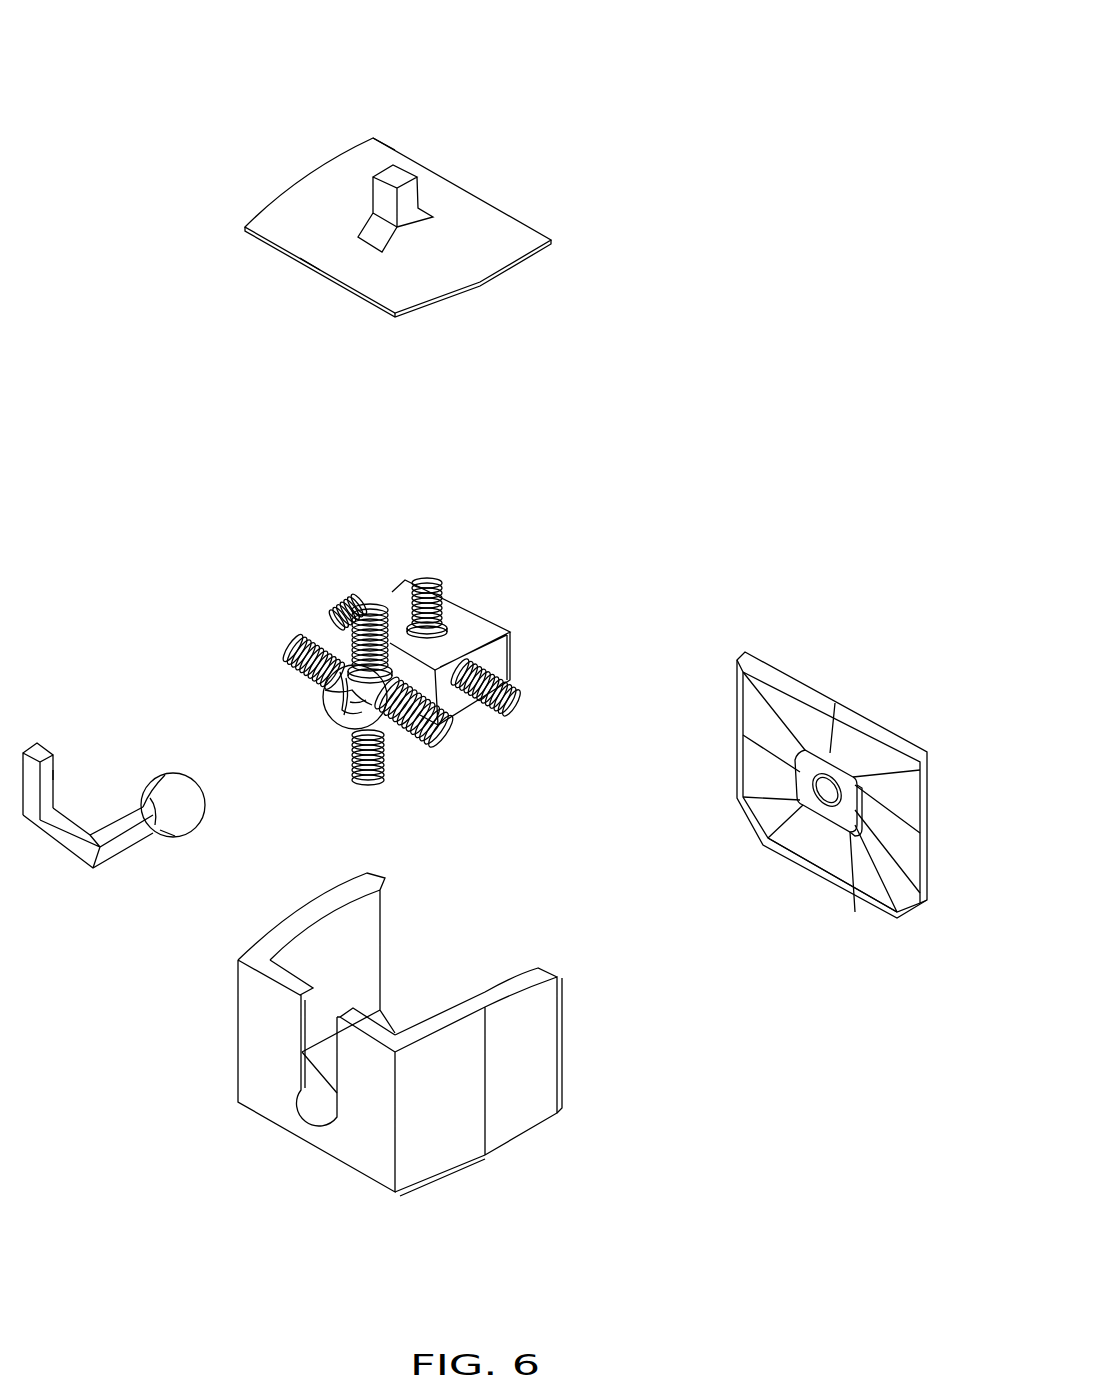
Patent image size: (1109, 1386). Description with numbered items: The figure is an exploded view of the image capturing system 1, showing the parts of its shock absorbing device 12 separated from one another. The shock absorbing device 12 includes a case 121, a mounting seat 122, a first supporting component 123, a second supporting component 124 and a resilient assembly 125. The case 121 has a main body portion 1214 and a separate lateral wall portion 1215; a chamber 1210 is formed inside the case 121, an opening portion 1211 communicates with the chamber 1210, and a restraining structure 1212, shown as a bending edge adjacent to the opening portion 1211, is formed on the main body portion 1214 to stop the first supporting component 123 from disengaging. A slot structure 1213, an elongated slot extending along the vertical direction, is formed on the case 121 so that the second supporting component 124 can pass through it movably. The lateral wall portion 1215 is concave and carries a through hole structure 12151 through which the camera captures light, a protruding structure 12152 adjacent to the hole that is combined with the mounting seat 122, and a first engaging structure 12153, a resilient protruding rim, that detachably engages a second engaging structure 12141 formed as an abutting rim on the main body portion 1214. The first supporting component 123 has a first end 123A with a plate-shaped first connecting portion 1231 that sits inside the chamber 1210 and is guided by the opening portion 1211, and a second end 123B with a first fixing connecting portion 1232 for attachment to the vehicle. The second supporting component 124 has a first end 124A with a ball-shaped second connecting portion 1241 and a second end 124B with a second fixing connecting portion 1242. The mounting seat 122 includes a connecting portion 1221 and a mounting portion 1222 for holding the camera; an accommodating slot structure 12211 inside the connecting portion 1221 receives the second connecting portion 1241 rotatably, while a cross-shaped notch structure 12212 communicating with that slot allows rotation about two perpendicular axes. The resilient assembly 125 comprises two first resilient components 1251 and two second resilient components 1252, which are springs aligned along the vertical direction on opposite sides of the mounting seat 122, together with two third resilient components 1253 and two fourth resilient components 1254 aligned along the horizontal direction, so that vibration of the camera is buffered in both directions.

The image capturing system 1 is at (722, 38).
The shock absorbing device 12 is at (687, 525).
The case 121 is at (205, 1098).
The chamber 1210 is at (455, 992).
The opening portion 1211 is at (360, 903).
The restraining structure 1212 is at (548, 972).
The slot structure 1213 is at (317, 1093).
The main body portion 1214 is at (520, 1118).
The second engaging structure 12141 is at (560, 1080).
The lateral wall portion 1215 is at (903, 787).
The through hole structure 12151 is at (825, 787).
The protruding structure 12152 is at (850, 817).
The first engaging structure 12153 is at (790, 853).
The mounting seat 122 is at (617, 592).
The connecting portion 1221 is at (490, 625).
The mounting portion 1222 is at (493, 655).
The accommodating slot structure 12211 is at (337, 713).
The notch structure 12212 is at (372, 713).
The first supporting component 123 is at (408, 200).
The first connecting portion 1231 is at (447, 278).
The first fixing connecting portion 1232 is at (405, 175).
The first end of first supporting component 123A is at (313, 298).
The second end of first supporting component 123B is at (372, 165).
The second supporting component 124 is at (70, 840).
The second connecting portion 1241 is at (187, 817).
The second fixing connecting portion 1242 is at (40, 753).
The first end of second supporting component 124A is at (192, 842).
The second end of second supporting component 124B is at (60, 763).
The resilient assembly 125 is at (480, 562).
The first resilient component 1251 is at (423, 580).
The second resilient component 1252 is at (413, 735).
The third resilient component 1253 is at (340, 616).
The fourth resilient component 1254 is at (513, 702).